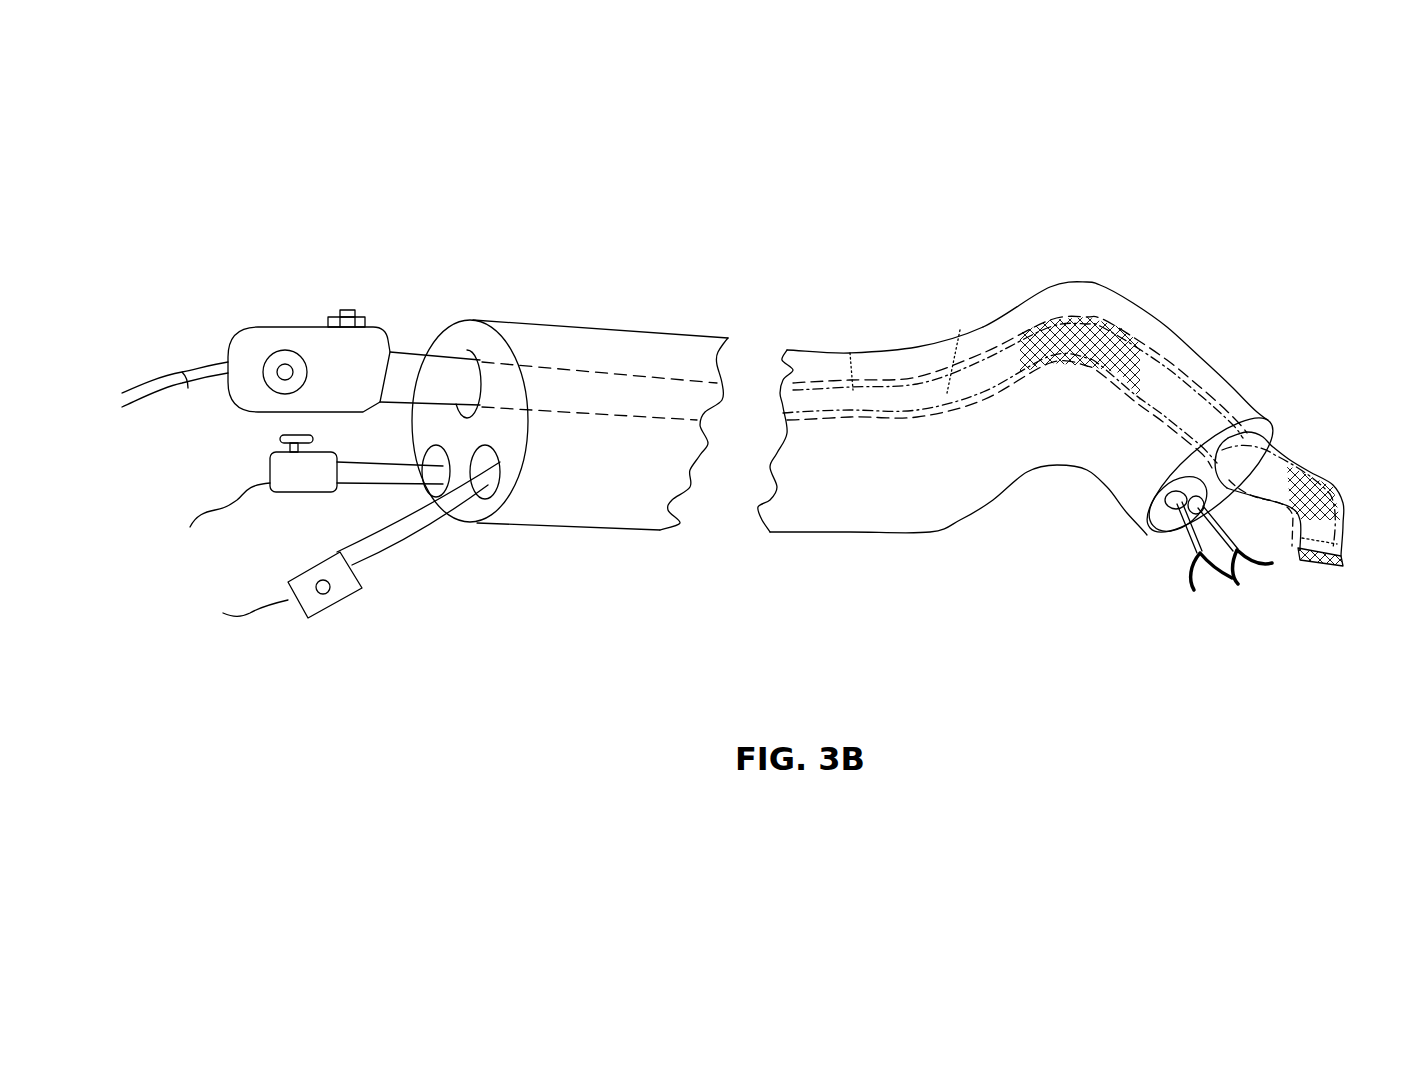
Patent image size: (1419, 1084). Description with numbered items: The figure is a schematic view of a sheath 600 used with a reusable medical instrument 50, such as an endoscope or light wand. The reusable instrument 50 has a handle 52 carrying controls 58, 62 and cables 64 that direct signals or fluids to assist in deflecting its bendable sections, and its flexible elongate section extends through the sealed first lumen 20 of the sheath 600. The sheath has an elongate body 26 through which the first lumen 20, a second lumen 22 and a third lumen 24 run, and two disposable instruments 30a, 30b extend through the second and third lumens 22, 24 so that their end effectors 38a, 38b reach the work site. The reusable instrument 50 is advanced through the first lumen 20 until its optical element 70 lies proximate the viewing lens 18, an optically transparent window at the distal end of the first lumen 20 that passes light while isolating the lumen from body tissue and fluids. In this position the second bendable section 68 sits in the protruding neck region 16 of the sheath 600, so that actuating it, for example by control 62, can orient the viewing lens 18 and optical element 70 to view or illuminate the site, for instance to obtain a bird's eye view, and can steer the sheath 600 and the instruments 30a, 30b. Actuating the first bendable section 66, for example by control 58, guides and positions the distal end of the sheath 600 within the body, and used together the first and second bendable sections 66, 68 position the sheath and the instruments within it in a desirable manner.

The sheath 600 is at (552, 302).
The first lumen 20 is at (627, 393).
The handle 52 is at (372, 362).
The control 58 is at (282, 368).
The control 62 is at (343, 307).
The cables 64 is at (155, 390).
The reusable instrument 50 is at (960, 330).
The first bendable section 66 is at (1087, 313).
The elongate body 26 is at (866, 507).
The neck region 16 is at (1303, 453).
The second bendable section 68 is at (1333, 482).
The optical element 70 is at (1325, 537).
The viewing lens 18 is at (1313, 573).
The third lumen 24 is at (1165, 479).
The second lumen 22 is at (1198, 505).
The disposable instrument 30a is at (1186, 542).
The disposable instrument 30b is at (1234, 532).
The end effector 38a is at (1193, 592).
The end effector 38b is at (1238, 586).